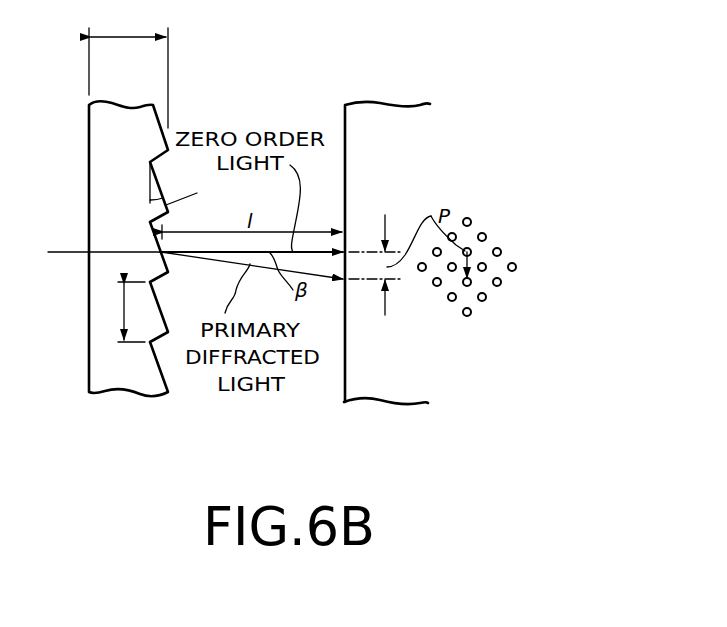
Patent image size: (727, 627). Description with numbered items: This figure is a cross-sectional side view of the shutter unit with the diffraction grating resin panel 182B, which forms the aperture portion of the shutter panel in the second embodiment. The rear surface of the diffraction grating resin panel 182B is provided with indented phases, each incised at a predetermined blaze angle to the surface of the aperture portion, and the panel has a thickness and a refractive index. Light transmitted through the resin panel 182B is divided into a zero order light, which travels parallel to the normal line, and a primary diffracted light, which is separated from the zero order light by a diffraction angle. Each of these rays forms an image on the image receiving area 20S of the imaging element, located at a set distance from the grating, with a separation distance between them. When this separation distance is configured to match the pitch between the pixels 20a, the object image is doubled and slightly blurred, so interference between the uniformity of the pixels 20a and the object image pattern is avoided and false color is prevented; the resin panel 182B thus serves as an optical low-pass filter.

The diffraction grating resin panel 182B is at (137, 379).
The image receiving area 20S is at (345, 132).
The pixels 20a is at (499, 285).